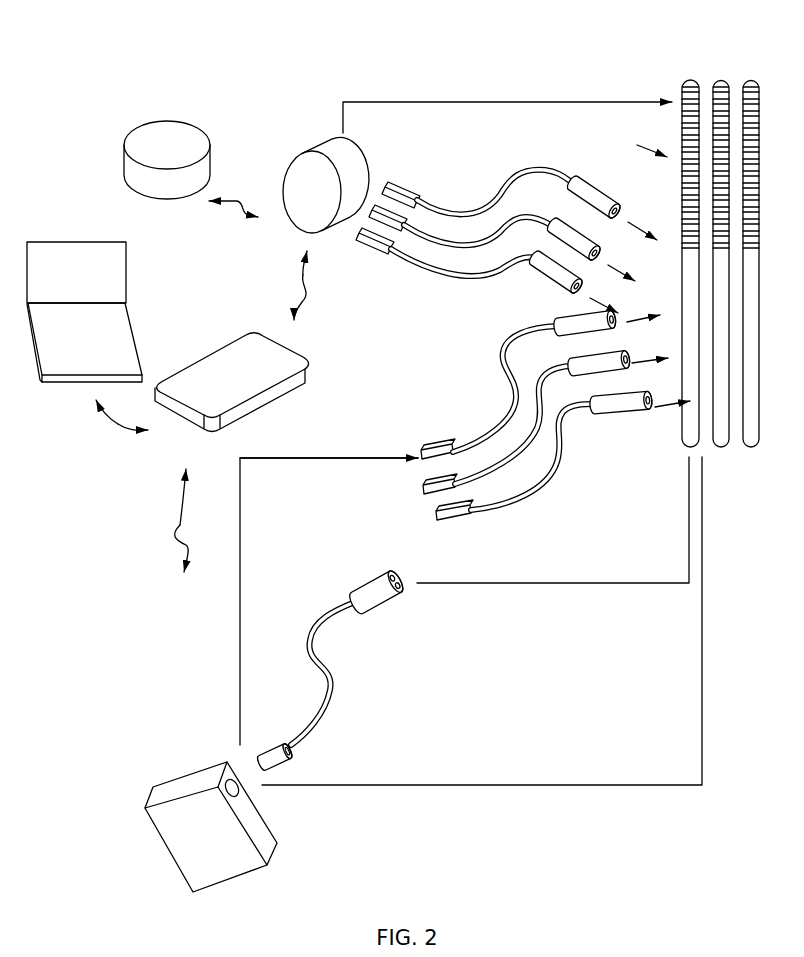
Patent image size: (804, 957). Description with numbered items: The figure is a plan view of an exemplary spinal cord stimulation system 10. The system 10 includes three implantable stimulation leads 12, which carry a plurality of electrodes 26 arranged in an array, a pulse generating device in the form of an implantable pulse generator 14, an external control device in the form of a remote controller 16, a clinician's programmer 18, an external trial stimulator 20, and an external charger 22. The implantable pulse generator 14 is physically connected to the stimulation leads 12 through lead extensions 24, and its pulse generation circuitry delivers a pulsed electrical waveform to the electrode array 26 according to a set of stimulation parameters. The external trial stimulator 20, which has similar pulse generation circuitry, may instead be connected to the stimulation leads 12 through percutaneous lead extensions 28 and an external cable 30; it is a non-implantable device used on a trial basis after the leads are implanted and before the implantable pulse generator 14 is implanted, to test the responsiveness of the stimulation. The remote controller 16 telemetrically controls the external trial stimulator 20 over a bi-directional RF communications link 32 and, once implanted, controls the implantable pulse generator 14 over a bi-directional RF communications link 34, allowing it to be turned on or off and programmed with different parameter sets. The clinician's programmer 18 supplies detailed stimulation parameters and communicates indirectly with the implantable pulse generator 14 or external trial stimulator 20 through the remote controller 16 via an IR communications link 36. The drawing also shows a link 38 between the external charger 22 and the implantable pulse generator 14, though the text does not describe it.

The spinal cord stimulation (SCS) system 10 is at (484, 47).
The implantable stimulation leads 12 is at (752, 80).
The implantable pulse generator (IPG) 14 is at (310, 152).
The remote controller (RC) 16 is at (242, 347).
The clinician's programmer (CP) 18 is at (64, 255).
The external trial stimulator (ETS) 20 is at (187, 785).
The external charger 22 is at (168, 128).
The lead extensions 24 is at (536, 173).
The electrodes 26 is at (690, 115).
The percutaneous lead extensions 28 is at (482, 510).
The external cable 30 is at (327, 613).
The bi-directional RF communications link 32 is at (186, 557).
The bi-directional RF communications link 34 is at (308, 296).
The IR communications link 36 is at (118, 424).
The charger-IPG inductive link 38 is at (220, 201).